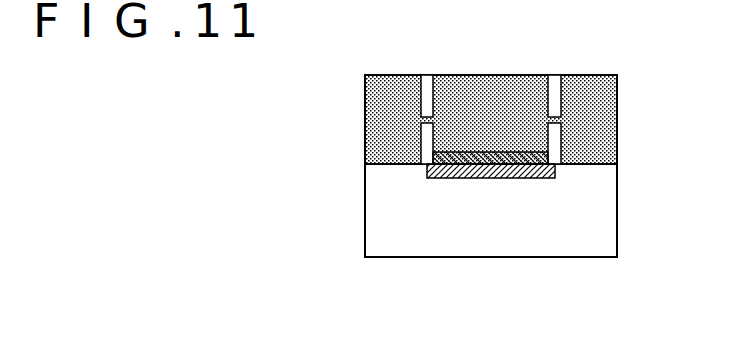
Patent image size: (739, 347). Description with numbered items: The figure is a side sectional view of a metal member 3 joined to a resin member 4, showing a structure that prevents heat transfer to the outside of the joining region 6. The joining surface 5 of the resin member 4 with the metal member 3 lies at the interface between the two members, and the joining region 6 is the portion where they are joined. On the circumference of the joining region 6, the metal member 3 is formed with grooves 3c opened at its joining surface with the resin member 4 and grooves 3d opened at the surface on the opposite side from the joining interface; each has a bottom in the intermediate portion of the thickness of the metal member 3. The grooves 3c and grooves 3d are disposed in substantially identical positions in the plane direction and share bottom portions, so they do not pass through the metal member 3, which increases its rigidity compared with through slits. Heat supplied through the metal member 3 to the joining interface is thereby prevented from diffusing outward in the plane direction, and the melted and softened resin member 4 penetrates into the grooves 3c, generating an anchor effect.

The metal member 3 is at (618, 111).
The grooves 3c is at (420, 126).
The grooves 3d is at (427, 77).
The resin member 4 is at (618, 206).
The joining surface 5 is at (557, 169).
The joining region 6 is at (510, 150).